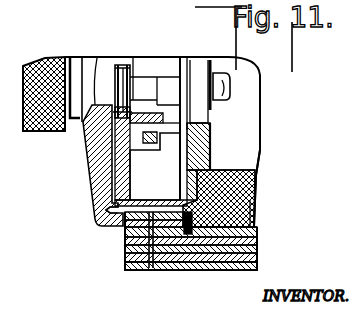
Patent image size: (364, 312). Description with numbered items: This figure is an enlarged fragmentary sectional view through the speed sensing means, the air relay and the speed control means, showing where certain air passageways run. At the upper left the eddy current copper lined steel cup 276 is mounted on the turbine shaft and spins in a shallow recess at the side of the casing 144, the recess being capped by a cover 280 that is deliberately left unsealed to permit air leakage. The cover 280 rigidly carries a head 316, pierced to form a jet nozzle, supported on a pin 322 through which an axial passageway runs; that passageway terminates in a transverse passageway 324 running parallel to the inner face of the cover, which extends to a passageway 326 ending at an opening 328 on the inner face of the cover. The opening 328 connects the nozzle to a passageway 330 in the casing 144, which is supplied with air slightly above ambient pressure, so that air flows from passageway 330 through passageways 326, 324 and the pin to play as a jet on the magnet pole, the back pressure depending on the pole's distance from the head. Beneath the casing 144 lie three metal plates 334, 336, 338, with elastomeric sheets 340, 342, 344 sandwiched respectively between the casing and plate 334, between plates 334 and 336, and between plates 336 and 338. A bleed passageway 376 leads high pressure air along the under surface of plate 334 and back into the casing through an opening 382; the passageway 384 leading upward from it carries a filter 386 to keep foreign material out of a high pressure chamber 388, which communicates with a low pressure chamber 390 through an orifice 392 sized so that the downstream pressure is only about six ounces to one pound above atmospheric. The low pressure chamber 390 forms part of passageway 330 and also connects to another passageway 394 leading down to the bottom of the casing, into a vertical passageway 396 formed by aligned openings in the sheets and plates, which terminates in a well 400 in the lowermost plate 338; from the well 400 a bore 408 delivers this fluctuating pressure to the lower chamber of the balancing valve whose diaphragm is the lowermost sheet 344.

The casing 144 is at (255, 183).
The eddy current copper lined steel cup 276 is at (156, 150).
The cover 280 is at (98, 168).
The head 316 is at (158, 142).
The pin 322 is at (112, 153).
The transverse passageway 324 is at (101, 189).
The passageway 326 is at (112, 214).
The opening 328 is at (124, 229).
The passageway 330 is at (141, 128).
The metal plate 334 is at (258, 239).
The metal plate 336 is at (258, 249).
The metal plate 338 is at (258, 263).
The elastomeric sheet 340 is at (255, 232).
The elastomeric sheet 342 is at (230, 270).
The elastomeric sheet 344 is at (196, 263).
The bleed passageway 376 is at (247, 222).
The opening 382 is at (196, 225).
The passageway 384 is at (206, 212).
The filter 386 is at (219, 198).
The high pressure chamber 388 is at (211, 157).
The low pressure chamber 390 is at (188, 193).
The orifice 392 is at (217, 146).
The passageway 394 is at (134, 250).
The vertical passageway 396 is at (133, 270).
The well 400 is at (172, 270).
The bore 408 is at (157, 270).